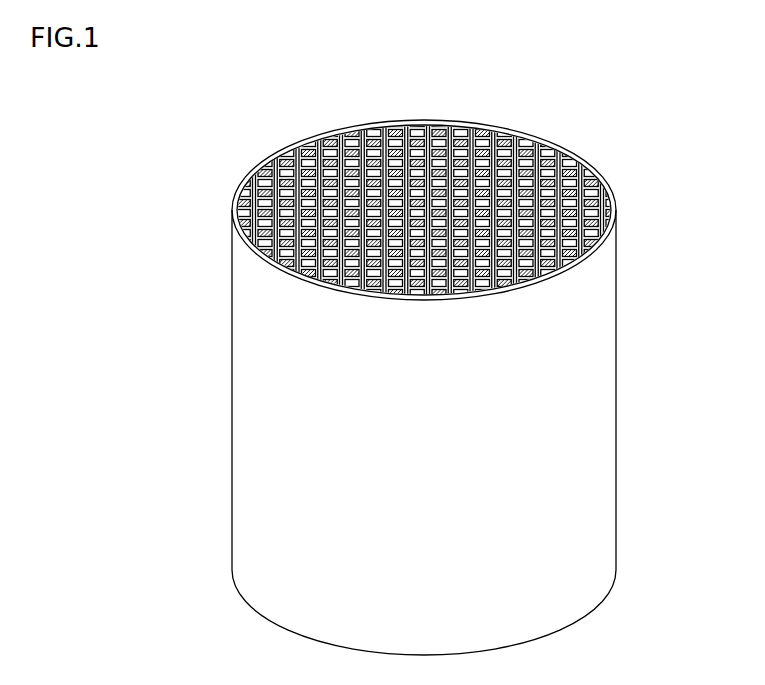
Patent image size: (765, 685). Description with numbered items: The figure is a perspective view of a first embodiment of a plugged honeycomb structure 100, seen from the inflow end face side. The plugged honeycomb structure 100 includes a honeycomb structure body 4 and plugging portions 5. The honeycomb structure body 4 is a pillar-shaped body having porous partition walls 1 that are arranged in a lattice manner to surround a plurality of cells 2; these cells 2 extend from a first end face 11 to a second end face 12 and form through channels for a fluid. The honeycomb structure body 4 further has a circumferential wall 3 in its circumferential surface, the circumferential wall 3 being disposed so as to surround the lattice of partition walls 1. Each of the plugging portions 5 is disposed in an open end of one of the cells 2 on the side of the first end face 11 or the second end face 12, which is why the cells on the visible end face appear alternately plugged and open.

The plugged honeycomb structure 100 is at (682, 66).
The partition walls 1 is at (471, 137).
The cells 2 is at (419, 136).
The circumferential wall 3 is at (594, 278).
The honeycomb structure body 4 is at (622, 381).
The plugging portions 5 is at (546, 182).
The first end face 11 is at (248, 171).
The second end face 12 is at (245, 603).